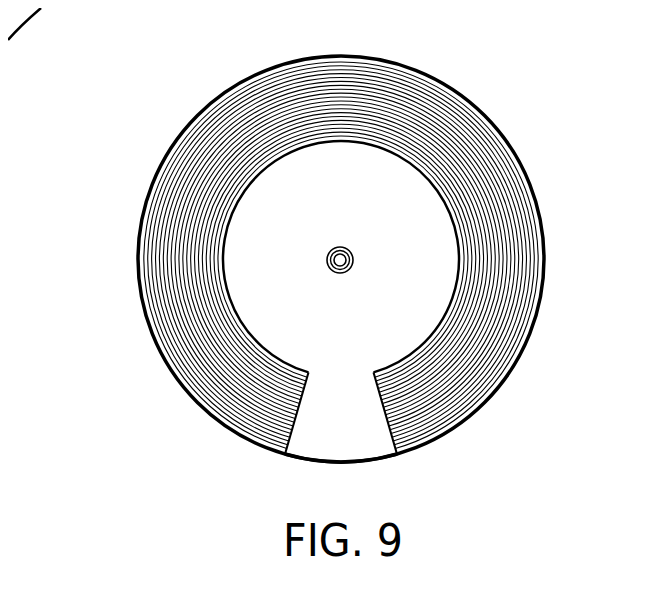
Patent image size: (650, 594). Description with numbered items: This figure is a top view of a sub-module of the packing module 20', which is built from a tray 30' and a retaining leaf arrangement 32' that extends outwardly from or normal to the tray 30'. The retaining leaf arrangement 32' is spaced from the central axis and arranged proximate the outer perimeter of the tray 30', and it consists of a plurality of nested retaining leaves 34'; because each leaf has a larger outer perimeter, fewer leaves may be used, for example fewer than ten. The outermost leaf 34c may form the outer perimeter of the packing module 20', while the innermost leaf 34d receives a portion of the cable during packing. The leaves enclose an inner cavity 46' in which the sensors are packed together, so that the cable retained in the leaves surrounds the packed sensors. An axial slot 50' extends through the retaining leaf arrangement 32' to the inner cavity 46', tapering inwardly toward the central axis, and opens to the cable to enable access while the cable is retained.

The packing module 20' is at (339, 238).
The tray 30' is at (341, 192).
The retaining leaf arrangement 32' is at (287, 255).
The retaining leaves 34' is at (310, 255).
The outermost leaf 34c is at (200, 407).
The innermost leaf 34d is at (423, 327).
The inner cavity 46' is at (312, 255).
The axial slot 50' is at (365, 465).